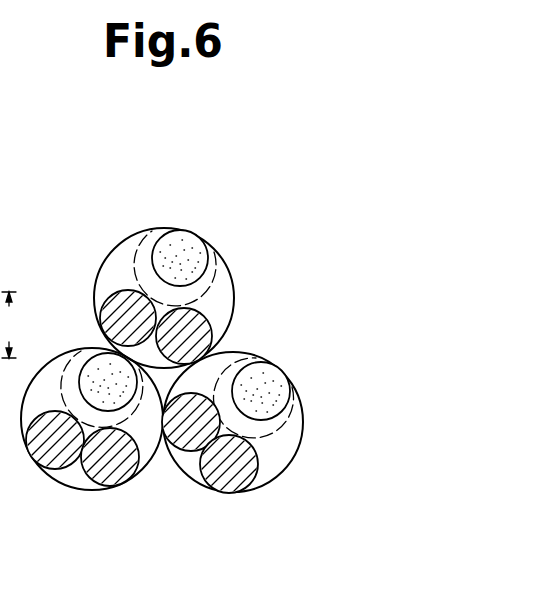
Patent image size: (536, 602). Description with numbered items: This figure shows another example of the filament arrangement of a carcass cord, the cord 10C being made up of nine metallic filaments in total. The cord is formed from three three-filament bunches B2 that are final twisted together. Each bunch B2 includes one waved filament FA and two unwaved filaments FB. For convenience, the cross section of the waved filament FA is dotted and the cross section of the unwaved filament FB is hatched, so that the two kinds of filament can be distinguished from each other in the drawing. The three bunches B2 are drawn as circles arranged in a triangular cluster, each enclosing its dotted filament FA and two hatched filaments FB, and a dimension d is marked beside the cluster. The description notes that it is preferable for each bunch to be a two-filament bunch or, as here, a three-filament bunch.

The optical fiber cable 10C is at (220, 351).
The three-filament bunch B2 is at (228, 267).
The waved filament FA is at (188, 242).
The unwaved filament FB is at (124, 300).
The distance between bundles d is at (8, 325).